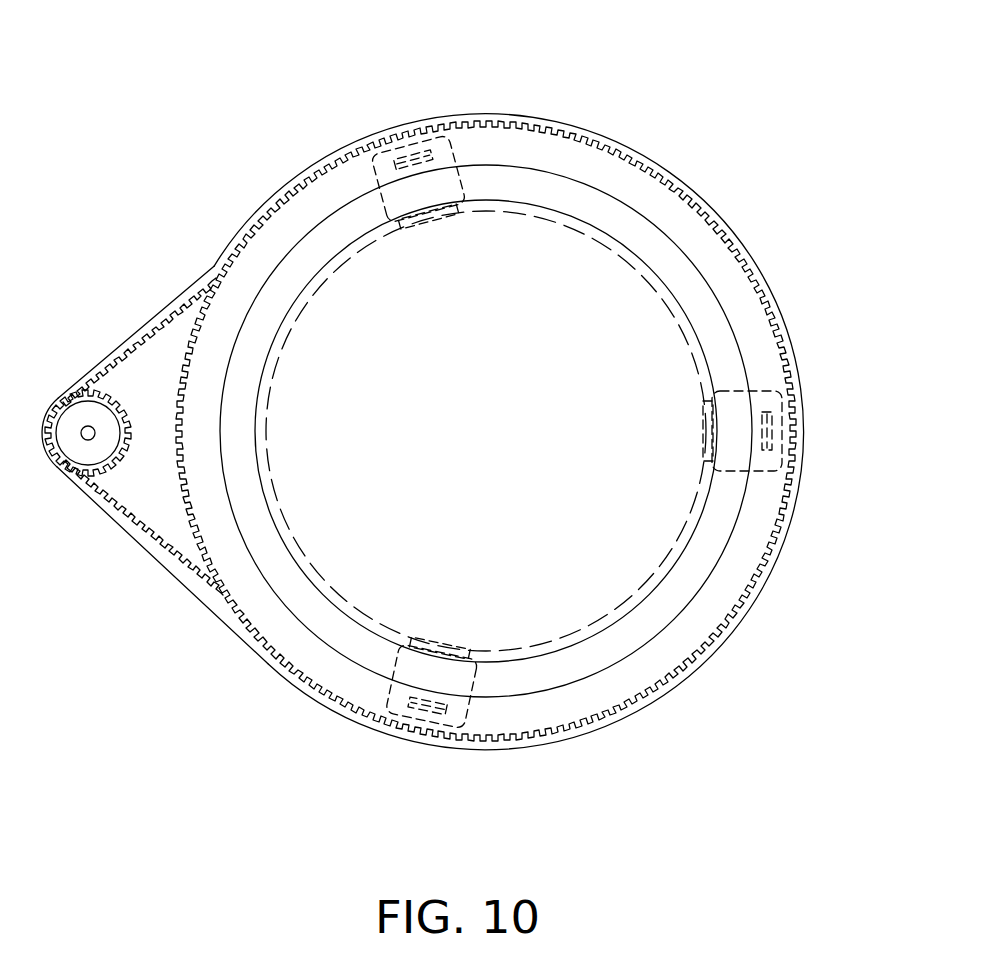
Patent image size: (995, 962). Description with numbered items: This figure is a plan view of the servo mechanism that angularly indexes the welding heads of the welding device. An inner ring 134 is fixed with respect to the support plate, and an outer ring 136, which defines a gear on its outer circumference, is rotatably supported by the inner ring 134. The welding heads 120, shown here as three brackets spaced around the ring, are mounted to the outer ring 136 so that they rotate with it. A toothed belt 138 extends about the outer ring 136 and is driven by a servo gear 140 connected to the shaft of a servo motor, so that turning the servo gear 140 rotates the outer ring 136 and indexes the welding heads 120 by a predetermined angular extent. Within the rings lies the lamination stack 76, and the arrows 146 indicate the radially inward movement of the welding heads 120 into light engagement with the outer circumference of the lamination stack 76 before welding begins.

The lamination stack 76 is at (636, 261).
The welding heads 120 is at (444, 150).
The inner ring 134 is at (548, 667).
The outer ring 136 is at (671, 657).
The toothed belt 138 is at (123, 344).
The servo gear 140 is at (140, 399).
The arrows 146 is at (398, 115).